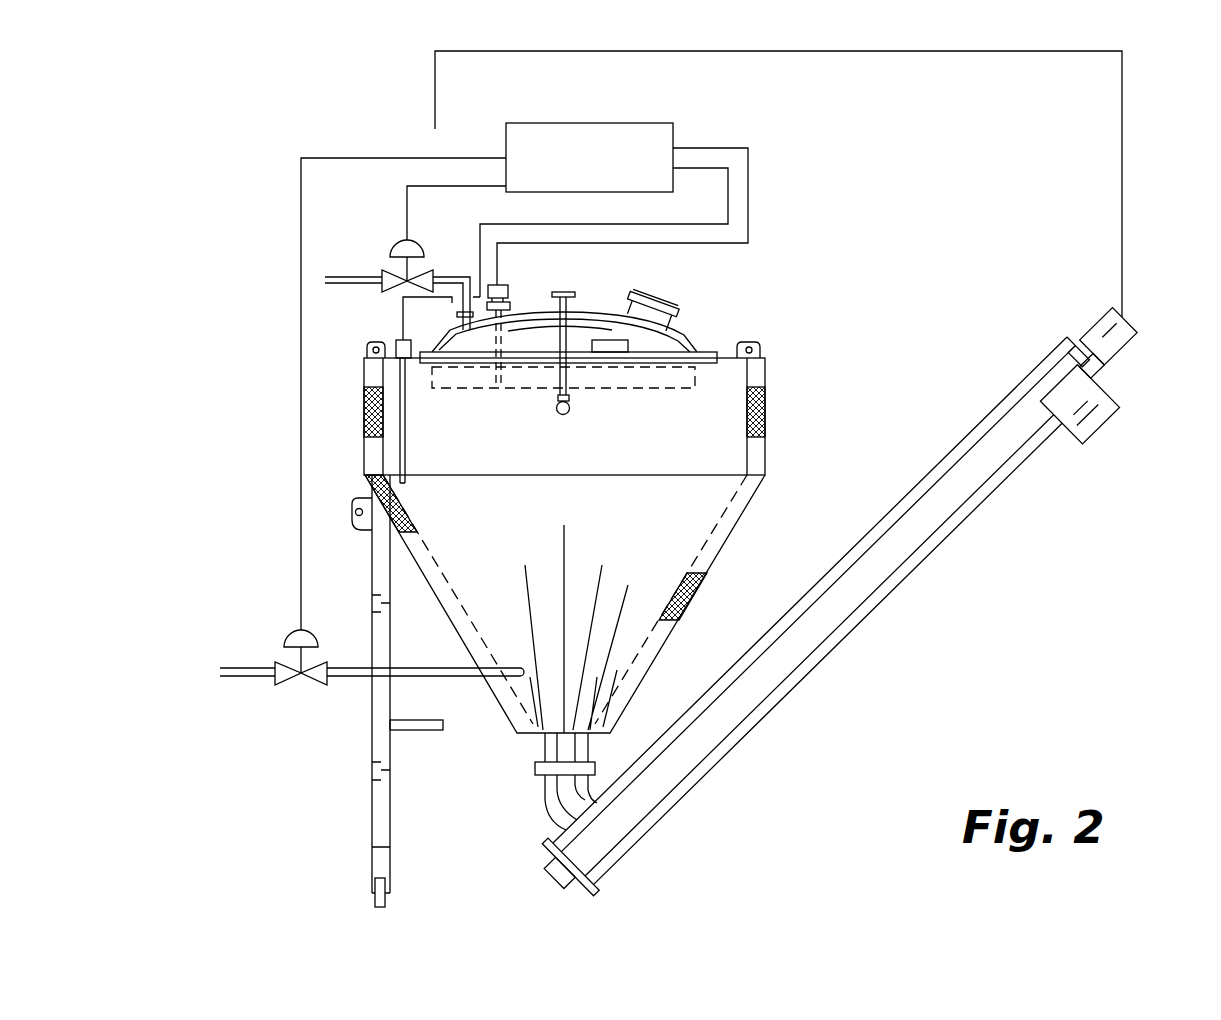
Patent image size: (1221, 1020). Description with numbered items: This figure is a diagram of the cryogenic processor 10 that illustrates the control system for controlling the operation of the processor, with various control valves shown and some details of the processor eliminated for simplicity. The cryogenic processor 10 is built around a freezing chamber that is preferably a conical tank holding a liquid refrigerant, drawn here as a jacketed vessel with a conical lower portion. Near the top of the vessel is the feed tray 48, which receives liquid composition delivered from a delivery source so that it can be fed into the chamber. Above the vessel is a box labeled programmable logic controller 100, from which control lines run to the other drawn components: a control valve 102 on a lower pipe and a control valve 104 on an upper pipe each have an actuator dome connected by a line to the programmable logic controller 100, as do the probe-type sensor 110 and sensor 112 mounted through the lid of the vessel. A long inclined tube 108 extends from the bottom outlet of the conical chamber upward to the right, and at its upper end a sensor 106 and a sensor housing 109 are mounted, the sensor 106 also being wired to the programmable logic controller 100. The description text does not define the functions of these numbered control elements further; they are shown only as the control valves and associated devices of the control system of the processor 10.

The cryogenic processor 10 is at (628, 569).
The feed tray 48 is at (670, 389).
The programmable logic controller 100 is at (570, 123).
The inlet valve 102 is at (283, 638).
The inlet valve 104 is at (384, 252).
The sensor 106 is at (1127, 347).
The discharge tube 108 is at (836, 644).
The sensor housing 109 is at (1087, 450).
The sensor 110 is at (402, 341).
The sensor 112 is at (504, 283).